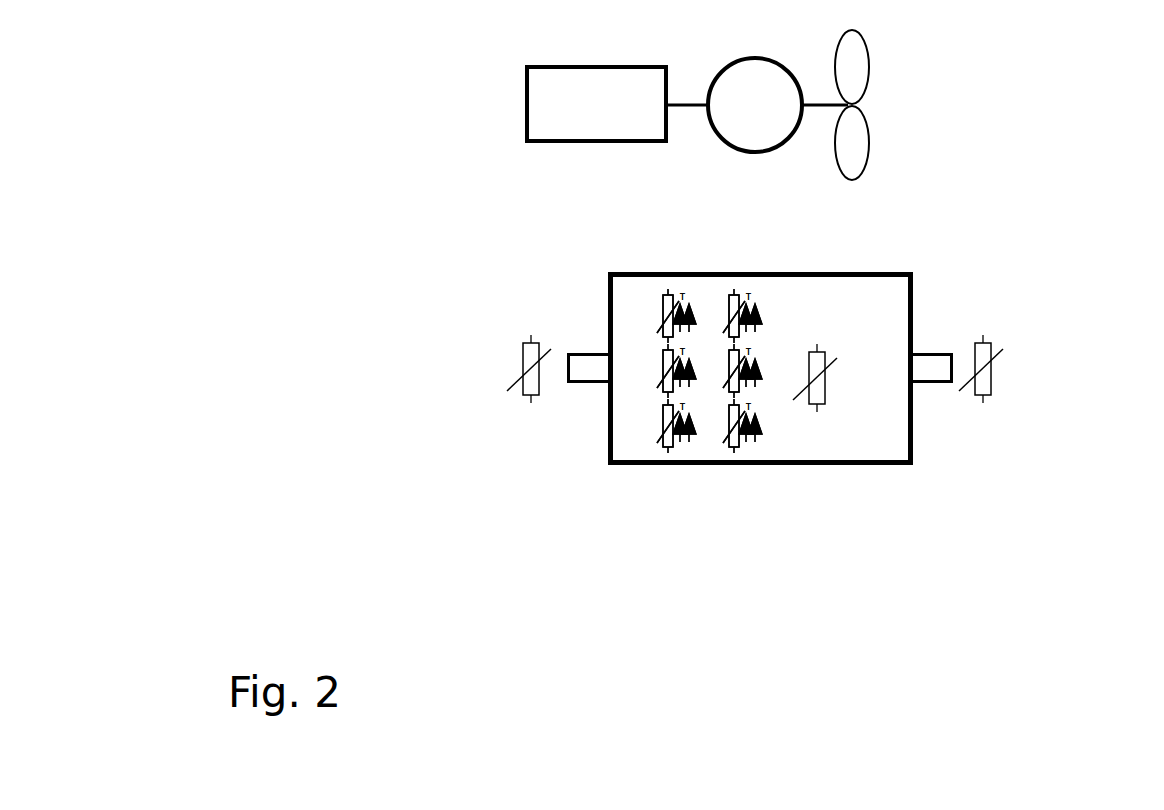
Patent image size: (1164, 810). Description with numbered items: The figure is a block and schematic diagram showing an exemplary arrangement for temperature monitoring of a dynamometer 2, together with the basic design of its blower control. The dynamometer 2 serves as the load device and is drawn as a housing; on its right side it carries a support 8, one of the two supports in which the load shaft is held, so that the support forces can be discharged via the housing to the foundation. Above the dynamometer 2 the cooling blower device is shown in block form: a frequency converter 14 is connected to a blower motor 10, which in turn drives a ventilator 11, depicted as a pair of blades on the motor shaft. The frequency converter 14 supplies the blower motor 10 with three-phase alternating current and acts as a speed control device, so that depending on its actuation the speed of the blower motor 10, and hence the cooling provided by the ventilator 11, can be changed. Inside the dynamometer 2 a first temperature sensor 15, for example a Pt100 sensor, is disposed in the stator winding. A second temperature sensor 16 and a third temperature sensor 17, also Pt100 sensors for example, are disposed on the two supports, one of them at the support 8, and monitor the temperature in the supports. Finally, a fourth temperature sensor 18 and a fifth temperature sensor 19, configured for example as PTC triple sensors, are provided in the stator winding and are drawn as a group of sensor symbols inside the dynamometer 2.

The dynamometer 2 is at (712, 264).
The support 8 is at (930, 343).
The blower motor 10 is at (716, 144).
The ventilator 11 is at (867, 105).
The frequency converter 14 is at (522, 105).
The first temperature sensor 15 is at (828, 404).
The second temperature sensor 16 is at (516, 403).
The third temperature sensor 17 is at (1005, 381).
The fourth temperature sensor 18 is at (703, 443).
The fifth temperature sensor 19 is at (687, 433).